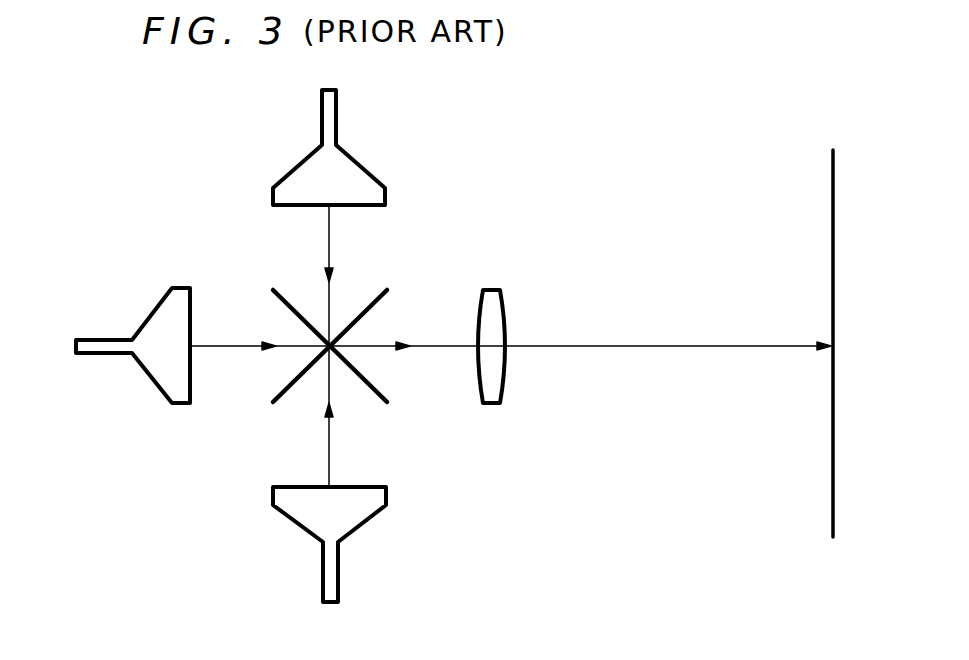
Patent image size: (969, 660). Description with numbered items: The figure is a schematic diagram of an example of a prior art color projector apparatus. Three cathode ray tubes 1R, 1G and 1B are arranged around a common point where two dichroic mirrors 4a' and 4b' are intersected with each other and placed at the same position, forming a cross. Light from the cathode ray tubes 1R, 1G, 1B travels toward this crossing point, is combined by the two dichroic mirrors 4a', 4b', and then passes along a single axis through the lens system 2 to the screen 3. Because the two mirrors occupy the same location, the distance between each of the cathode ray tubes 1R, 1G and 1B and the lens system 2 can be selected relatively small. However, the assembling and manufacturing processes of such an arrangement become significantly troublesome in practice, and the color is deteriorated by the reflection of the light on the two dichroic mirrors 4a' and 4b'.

The cathode ray tube 1R is at (375, 190).
The cathode ray tube 1G is at (153, 308).
The cathode ray tube 1B is at (322, 553).
The dichroic mirror 4a' is at (324, 321).
The dichroic mirror 4b' is at (333, 321).
The lens system 2 is at (500, 306).
The screen 3 is at (831, 254).